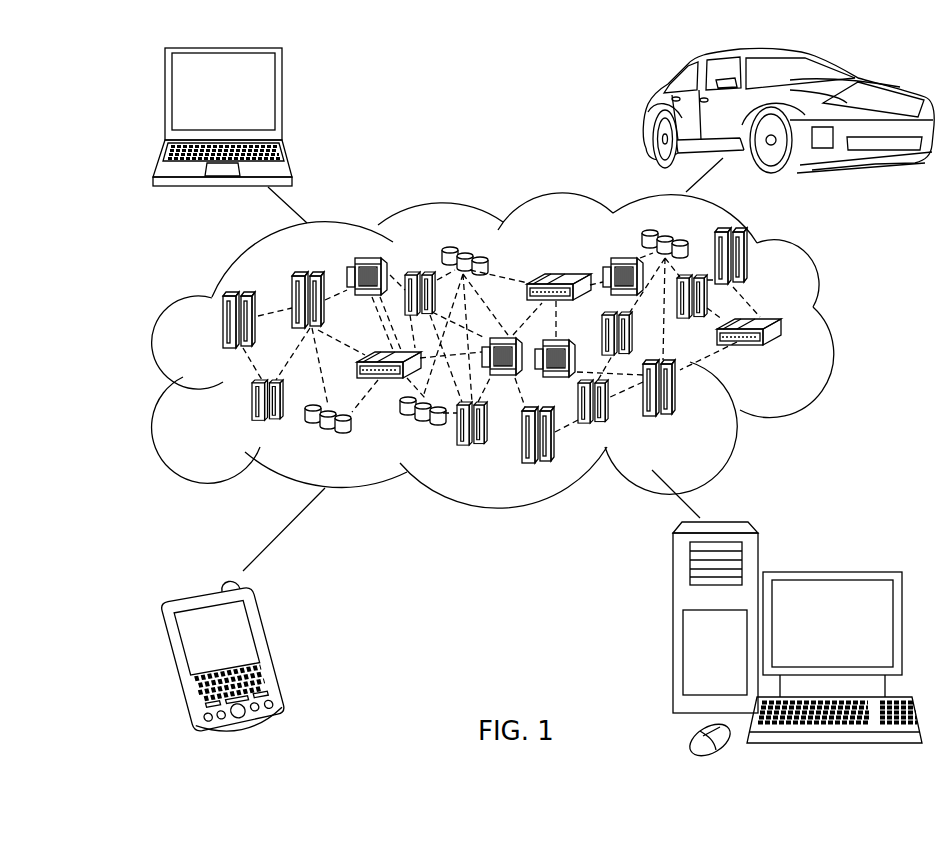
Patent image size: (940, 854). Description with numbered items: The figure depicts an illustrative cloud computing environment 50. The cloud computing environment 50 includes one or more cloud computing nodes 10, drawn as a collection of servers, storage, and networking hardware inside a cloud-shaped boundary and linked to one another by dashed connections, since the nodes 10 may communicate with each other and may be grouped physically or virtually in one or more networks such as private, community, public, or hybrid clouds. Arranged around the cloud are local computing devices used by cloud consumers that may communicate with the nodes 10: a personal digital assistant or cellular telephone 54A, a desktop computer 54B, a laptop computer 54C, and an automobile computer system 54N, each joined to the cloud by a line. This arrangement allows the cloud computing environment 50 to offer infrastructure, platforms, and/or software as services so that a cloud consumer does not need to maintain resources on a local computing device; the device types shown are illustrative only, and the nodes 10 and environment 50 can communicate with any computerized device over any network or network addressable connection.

The cloud computing nodes 10 is at (546, 345).
The cloud computing environment 50 is at (835, 329).
The personal digital assistant (PDA) or cellular telephone 54A is at (273, 648).
The desktop computer 54B is at (830, 572).
The laptop computer 54C is at (281, 98).
The automobile computer system 54N is at (651, 112).